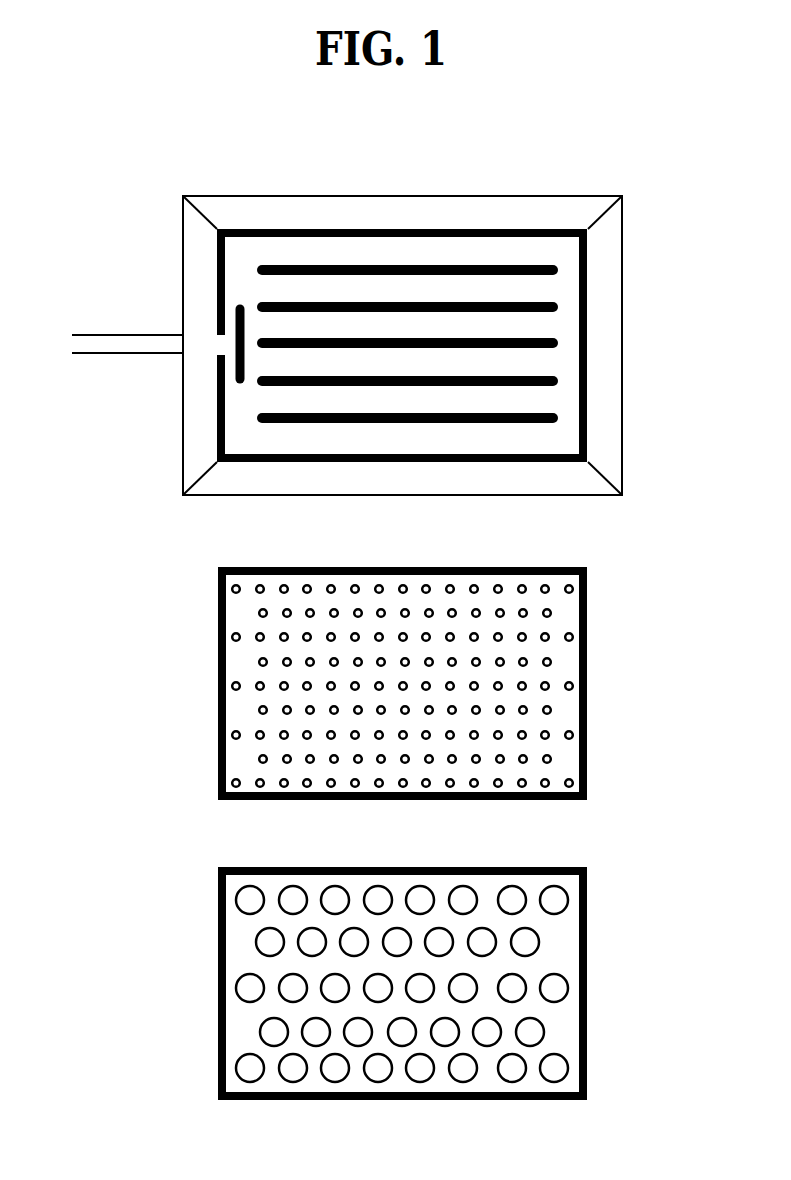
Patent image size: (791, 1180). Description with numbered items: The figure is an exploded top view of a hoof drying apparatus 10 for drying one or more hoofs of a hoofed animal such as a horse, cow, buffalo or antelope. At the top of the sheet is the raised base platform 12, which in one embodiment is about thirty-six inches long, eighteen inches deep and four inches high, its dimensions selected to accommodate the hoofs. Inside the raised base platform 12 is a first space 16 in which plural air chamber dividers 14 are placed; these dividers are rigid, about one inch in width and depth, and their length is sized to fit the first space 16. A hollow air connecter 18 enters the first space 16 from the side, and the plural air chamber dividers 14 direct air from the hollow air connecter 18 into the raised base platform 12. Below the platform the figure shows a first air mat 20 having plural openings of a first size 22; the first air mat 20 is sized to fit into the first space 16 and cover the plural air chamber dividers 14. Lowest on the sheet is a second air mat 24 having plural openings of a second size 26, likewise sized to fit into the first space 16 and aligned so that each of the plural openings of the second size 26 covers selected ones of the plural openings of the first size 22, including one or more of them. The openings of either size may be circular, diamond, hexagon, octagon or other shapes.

The hoof drying apparatus 10 is at (580, 113).
The raised base platform 12 is at (615, 195).
The plural air chamber dividers 14 is at (557, 420).
The first space 16 is at (563, 288).
The hollow air connecter 18 is at (137, 333).
The first air mat 20 is at (587, 568).
The plural openings of a first size 22 is at (570, 783).
The second air mat 24 is at (587, 868).
The plural openings of a second size 26 is at (554, 1068).